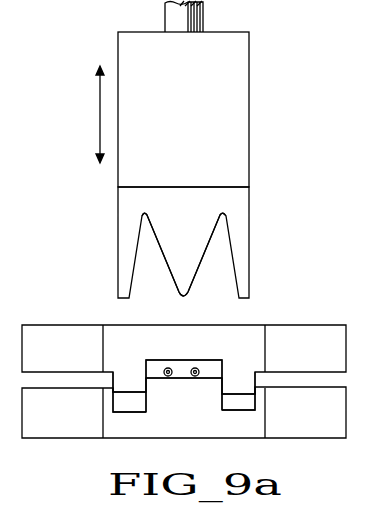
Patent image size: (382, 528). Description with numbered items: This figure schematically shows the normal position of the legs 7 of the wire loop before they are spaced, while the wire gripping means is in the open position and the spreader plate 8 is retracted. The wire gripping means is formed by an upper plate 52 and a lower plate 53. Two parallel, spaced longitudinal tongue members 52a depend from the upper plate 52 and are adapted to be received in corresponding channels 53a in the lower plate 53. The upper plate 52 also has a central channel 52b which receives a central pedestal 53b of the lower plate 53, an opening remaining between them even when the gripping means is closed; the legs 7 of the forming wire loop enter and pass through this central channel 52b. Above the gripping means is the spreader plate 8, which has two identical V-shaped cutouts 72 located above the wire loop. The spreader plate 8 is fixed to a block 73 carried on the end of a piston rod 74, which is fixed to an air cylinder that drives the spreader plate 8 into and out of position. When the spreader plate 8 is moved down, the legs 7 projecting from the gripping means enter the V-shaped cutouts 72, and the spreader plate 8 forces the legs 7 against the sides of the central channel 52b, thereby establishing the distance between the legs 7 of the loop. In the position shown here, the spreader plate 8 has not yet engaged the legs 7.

The legs 7 is at (195, 377).
The spreader plate 8 is at (244, 216).
The upper plate 52 is at (320, 331).
The tongue members 52a is at (124, 378).
The central channel 52b is at (180, 365).
The lower plate 53 is at (312, 428).
The channels 53a is at (135, 405).
The central pedestal 53b is at (158, 397).
The V-shaped cutouts 72 is at (221, 213).
The block 73 is at (241, 63).
The piston rod 74 is at (200, 21).